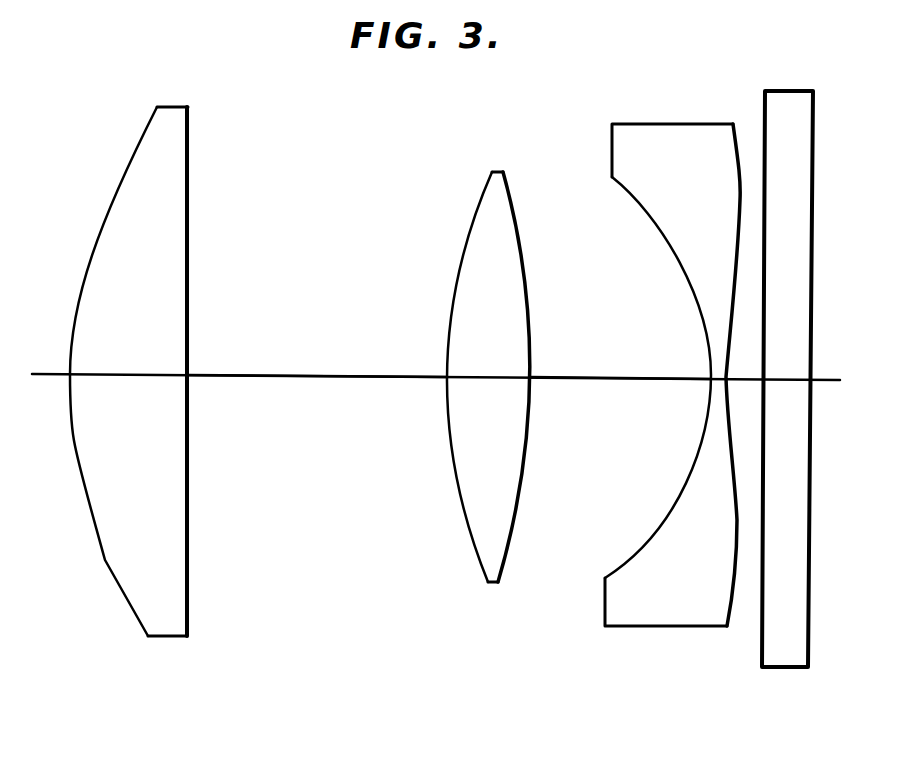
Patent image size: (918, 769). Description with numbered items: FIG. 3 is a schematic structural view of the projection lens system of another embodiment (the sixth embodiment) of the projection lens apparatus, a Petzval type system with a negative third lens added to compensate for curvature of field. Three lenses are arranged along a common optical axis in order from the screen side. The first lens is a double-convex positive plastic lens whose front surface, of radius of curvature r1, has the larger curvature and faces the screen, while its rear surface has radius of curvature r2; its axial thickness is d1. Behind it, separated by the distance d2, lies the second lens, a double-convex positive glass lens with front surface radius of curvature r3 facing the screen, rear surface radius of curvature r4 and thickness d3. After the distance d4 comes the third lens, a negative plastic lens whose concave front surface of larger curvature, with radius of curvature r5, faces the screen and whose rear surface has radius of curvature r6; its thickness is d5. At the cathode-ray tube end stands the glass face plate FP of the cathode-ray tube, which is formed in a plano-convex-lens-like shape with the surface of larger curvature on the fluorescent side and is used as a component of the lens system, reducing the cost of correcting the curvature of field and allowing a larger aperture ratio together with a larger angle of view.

The radius of curvature of front surface of first lens r1 is at (112, 548).
The radius of curvature of rear surface of first lens r2 is at (187, 545).
The radius of curvature of front surface of second lens r3 is at (472, 538).
The radius of curvature of rear surface of second lens r4 is at (512, 545).
The radius of curvature of front surface of third lens r5 is at (665, 512).
The radius of curvature of rear surface of third lens r6 is at (730, 627).
The axial thickness of first lens d1 is at (141, 371).
The distance between first and second lenses d2 is at (317, 359).
The axial thickness of second lens d3 is at (492, 378).
The distance between second and third lenses d4 is at (620, 364).
The axial thickness of third lens d5 is at (675, 400).
The glass face plate FP is at (787, 668).